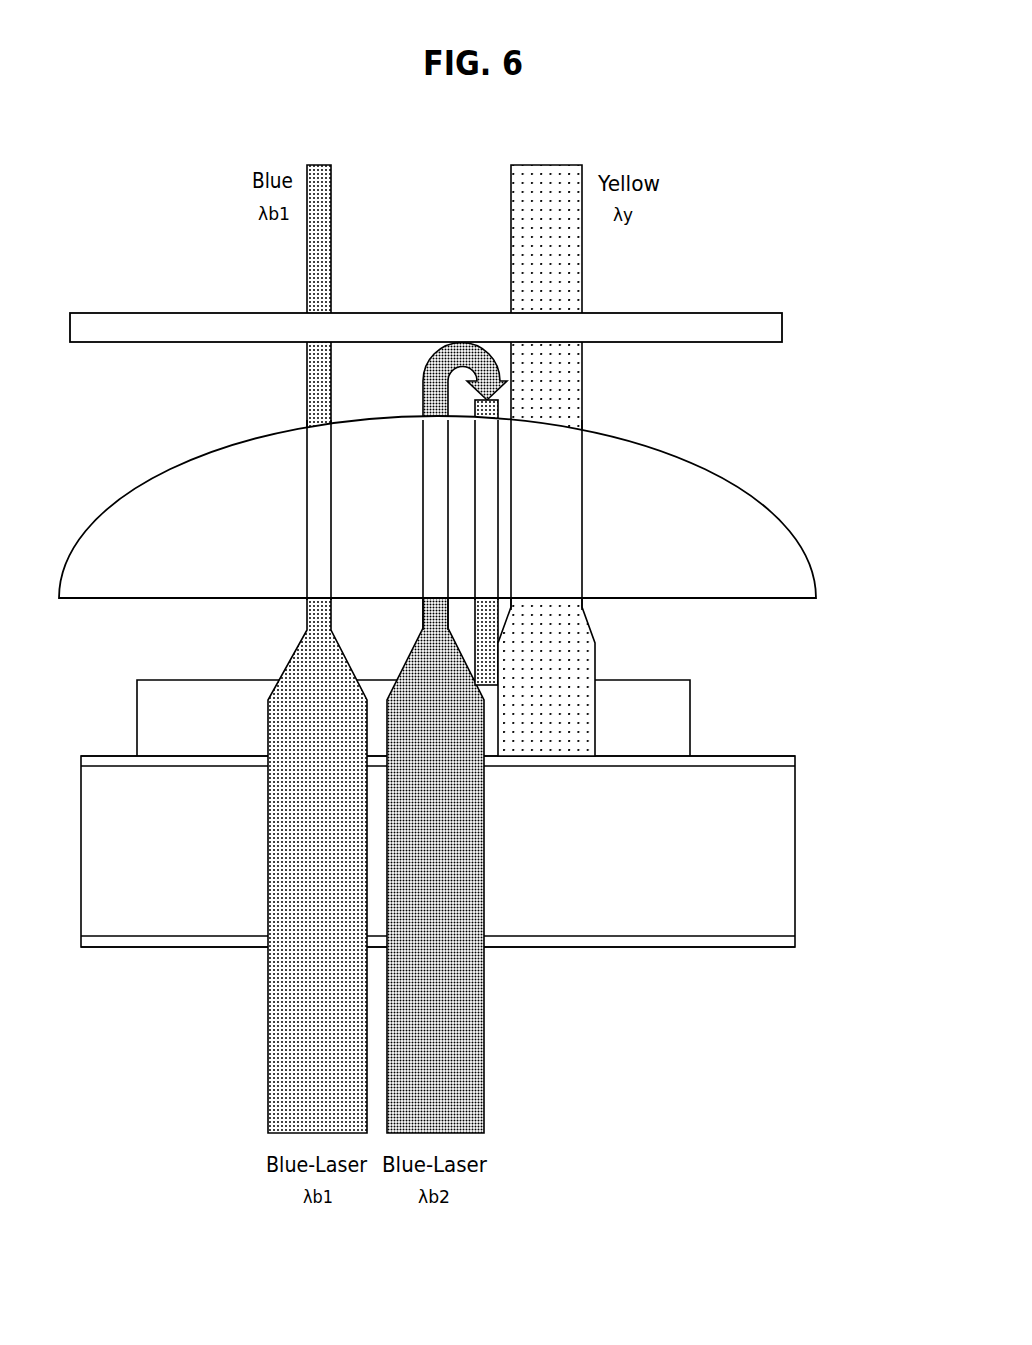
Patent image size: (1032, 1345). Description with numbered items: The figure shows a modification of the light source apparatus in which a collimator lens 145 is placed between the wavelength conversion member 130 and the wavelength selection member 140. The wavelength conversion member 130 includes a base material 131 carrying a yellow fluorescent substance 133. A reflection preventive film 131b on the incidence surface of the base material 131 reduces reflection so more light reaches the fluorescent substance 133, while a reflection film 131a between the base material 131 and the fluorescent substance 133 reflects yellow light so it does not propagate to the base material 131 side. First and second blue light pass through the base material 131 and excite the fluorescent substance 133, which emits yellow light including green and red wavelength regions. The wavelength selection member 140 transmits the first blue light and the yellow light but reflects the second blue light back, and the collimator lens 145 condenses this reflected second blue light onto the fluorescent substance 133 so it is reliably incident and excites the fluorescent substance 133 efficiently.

The wavelength conversion member 130 is at (485, 780).
The base material 131 is at (785, 828).
The reflection film 131a is at (770, 759).
The reflection preventive film 131b is at (795, 943).
The fluorescent substance 133 is at (690, 713).
The wavelength selection member 140 is at (783, 327).
The collimator lens 145 is at (776, 516).